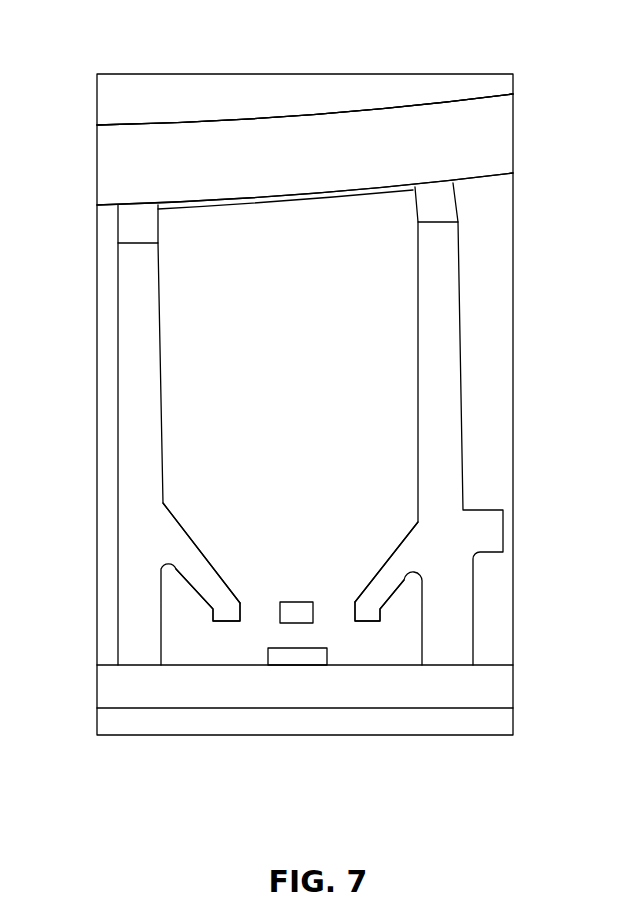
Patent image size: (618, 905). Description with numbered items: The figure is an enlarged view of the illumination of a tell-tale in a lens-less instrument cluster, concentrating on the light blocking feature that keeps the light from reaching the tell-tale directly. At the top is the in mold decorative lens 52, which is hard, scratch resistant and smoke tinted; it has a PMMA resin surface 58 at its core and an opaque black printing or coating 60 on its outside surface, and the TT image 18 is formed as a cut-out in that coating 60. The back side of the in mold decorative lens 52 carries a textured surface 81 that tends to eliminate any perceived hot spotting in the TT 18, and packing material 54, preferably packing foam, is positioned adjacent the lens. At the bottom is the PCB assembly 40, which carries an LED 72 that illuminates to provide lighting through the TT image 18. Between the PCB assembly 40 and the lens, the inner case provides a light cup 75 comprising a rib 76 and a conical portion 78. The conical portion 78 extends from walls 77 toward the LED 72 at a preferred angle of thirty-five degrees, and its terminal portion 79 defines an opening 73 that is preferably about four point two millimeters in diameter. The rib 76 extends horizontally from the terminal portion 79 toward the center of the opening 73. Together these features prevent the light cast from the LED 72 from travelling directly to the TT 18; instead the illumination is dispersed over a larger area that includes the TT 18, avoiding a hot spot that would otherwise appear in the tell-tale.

The tell-tale image 18 is at (290, 122).
The opaque black printing or coating 60 is at (317, 112).
The in mold decorative lens 52 is at (396, 126).
The PMMA surface 58 is at (490, 137).
The textured surface 81 is at (305, 204).
The packing material 54 is at (140, 219).
The light cup 75 is at (89, 244).
The walls 77 is at (452, 422).
The conical portion 78 is at (202, 568).
The rib 76 is at (298, 602).
The LED 72 is at (302, 658).
The opening 73 is at (255, 612).
The terminal portion 79 is at (370, 612).
The PCB assembly 40 is at (493, 683).